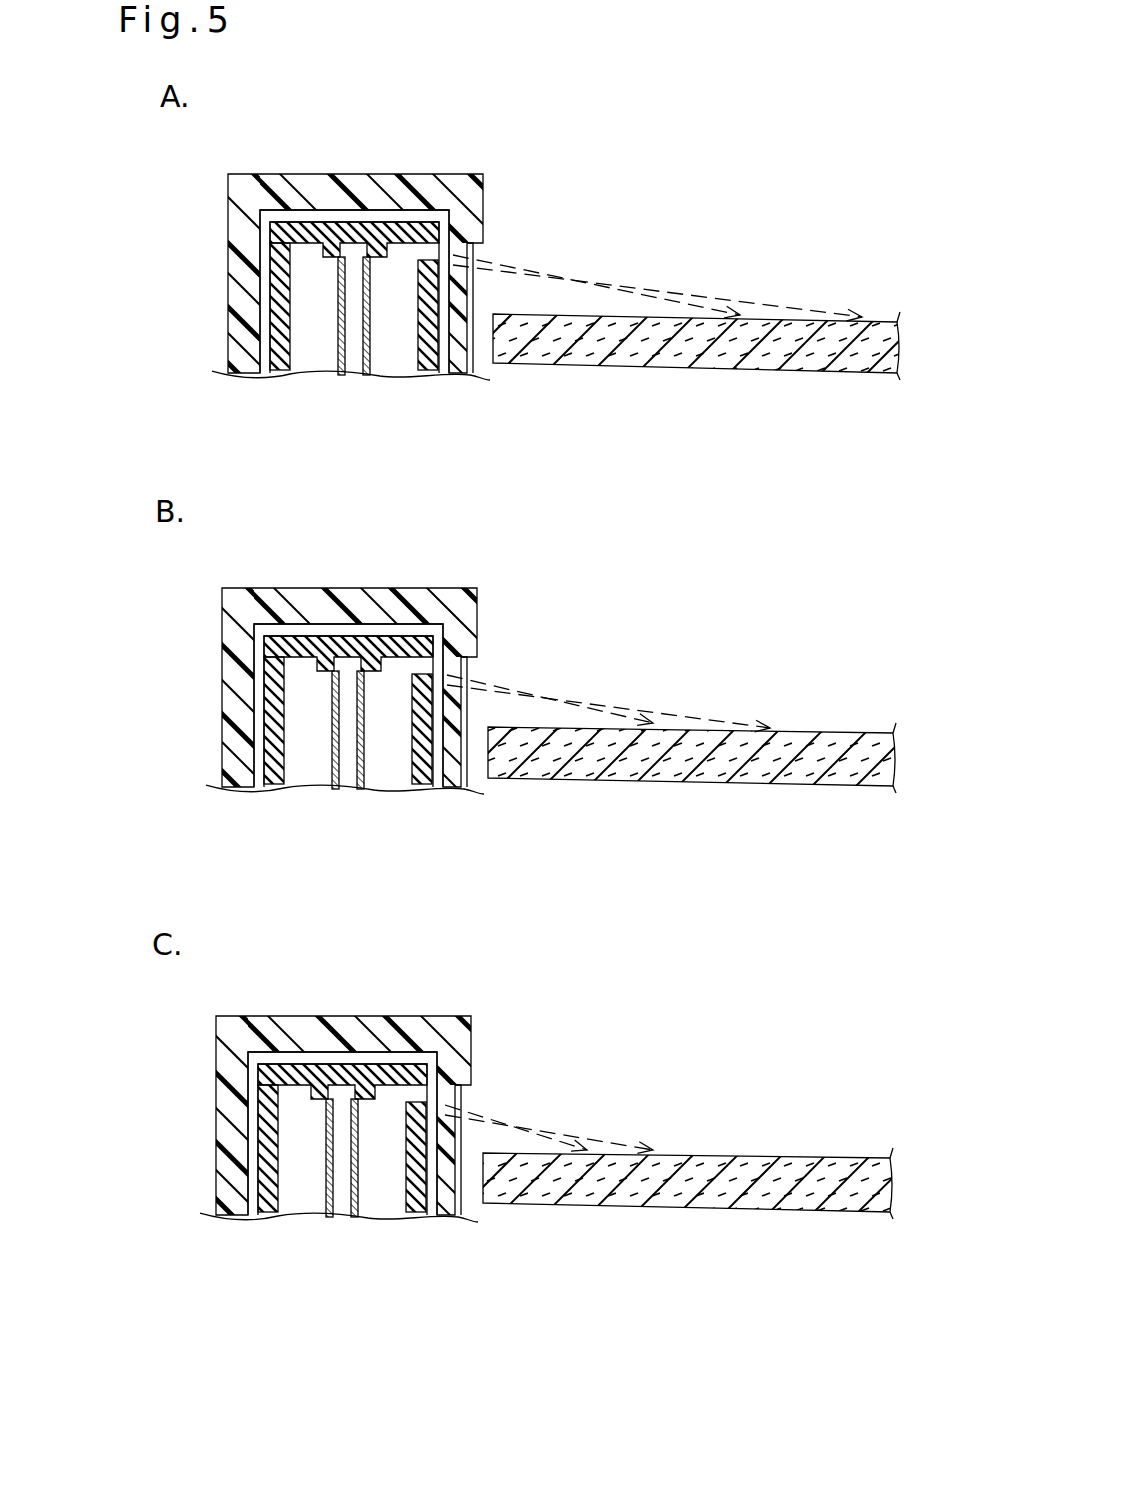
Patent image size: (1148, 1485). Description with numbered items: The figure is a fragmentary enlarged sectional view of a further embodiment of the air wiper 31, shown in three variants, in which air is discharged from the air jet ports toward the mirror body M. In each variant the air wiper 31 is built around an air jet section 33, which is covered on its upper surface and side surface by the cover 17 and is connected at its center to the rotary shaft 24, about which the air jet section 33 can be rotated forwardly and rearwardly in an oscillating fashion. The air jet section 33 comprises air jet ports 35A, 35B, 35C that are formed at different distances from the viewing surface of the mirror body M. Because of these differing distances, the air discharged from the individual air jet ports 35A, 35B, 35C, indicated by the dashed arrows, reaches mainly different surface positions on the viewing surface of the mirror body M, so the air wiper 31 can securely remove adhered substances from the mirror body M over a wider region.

The cover 17 is at (345, 192).
The air wiper 31 is at (195, 202).
The air jet port 35A is at (430, 225).
The air jet port 35B is at (425, 640).
The air jet port 35C is at (420, 1067).
The air jet section 33 is at (280, 362).
The rotary shaft 24 is at (370, 358).
The mirror body M is at (700, 367).